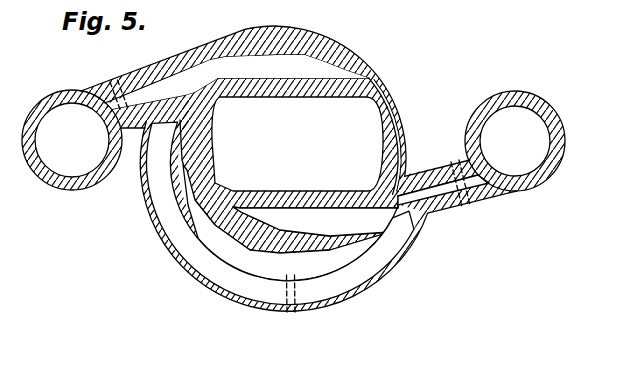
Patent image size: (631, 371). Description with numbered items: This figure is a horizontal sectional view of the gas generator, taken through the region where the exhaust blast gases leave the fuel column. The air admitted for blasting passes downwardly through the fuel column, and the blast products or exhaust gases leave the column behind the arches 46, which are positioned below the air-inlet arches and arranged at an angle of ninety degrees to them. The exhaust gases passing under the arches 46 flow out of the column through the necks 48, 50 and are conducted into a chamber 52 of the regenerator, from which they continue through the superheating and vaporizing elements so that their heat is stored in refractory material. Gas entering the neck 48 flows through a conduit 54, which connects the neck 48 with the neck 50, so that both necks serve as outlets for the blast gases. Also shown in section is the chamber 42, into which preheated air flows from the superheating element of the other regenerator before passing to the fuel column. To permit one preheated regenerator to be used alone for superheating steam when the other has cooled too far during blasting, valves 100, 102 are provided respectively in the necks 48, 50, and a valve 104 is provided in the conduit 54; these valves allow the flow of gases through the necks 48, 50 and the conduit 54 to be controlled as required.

The chamber 42 is at (62, 172).
The arches 46 is at (288, 96).
The neck 48 is at (149, 82).
The neck 50 is at (423, 185).
The chamber 52 is at (533, 115).
The conduit 54 is at (215, 282).
The valve 100 is at (100, 96).
The valve 102 is at (466, 199).
The valve 104 is at (292, 314).